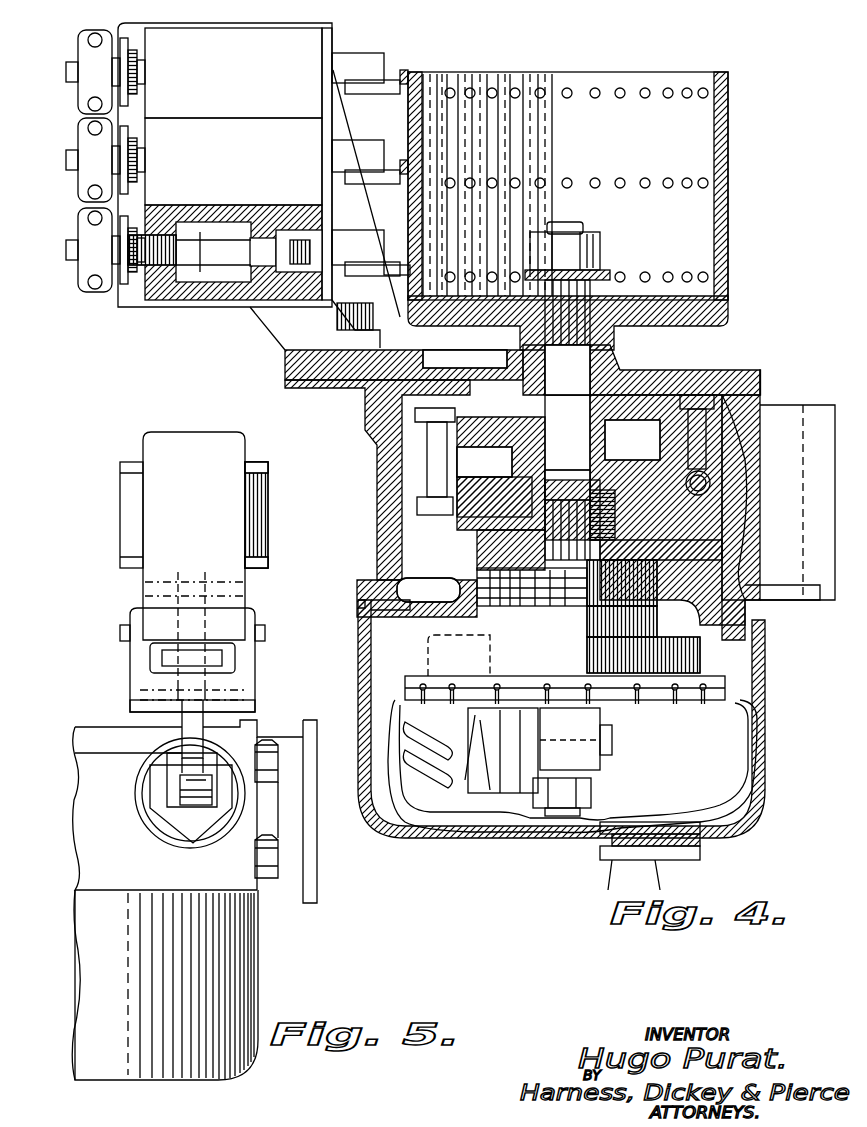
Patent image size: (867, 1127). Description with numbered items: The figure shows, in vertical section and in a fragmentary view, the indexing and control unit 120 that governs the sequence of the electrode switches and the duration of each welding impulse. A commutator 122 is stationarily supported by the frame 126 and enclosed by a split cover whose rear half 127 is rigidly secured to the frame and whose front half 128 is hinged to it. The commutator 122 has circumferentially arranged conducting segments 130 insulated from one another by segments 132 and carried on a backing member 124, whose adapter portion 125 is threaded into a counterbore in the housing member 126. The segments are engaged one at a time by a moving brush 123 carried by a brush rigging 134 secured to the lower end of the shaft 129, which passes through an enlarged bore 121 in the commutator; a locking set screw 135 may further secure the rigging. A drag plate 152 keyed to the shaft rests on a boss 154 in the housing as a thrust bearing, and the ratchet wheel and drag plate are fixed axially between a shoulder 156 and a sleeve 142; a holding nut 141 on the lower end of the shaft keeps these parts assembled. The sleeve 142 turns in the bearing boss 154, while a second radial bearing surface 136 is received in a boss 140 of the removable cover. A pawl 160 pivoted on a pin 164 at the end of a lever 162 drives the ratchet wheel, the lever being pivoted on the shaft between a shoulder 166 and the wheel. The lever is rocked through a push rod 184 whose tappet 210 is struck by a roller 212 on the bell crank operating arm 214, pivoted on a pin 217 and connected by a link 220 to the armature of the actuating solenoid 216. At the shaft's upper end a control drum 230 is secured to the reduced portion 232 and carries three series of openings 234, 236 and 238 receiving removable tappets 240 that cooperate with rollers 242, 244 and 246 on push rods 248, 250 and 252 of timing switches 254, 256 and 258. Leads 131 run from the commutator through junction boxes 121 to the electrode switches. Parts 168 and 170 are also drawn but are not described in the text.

In FIG. 4, the indexing and control unit 120 is at (722, 364).
In FIG. 5, the indexing and control unit 120 is at (244, 871).
In FIG. 4, the enlarged bore 121 is at (425, 655).
In FIG. 4, the commutator 122 is at (691, 713).
In FIG. 4, the brush 123 is at (368, 706).
In FIG. 4, the backing member 124 is at (700, 650).
In FIG. 4, the adapter portion 125 is at (480, 605).
In FIG. 4, the frame 126 is at (658, 605).
In FIG. 4, the rear half of split cover 127 is at (767, 725).
In FIG. 5, the rear half of split cover 127 is at (238, 988).
In FIG. 4, the front half of split cover 128 is at (358, 668).
In FIG. 4, the shaft 129 is at (560, 548).
In FIG. 4, the conducting segments 130 is at (470, 520).
In FIG. 4, the leads 131 is at (740, 770).
In FIG. 4, the insulating segments 132 is at (672, 707).
In FIG. 4, the brush rigging 134 is at (470, 793).
In FIG. 4, the locking set screw 135 is at (612, 748).
In FIG. 4, the second radial bearing surface 136 is at (600, 378).
In FIG. 4, the boss 140 is at (632, 365).
In FIG. 4, the holding nut 141 is at (592, 788).
In FIG. 4, the sleeve 142 is at (640, 560).
In FIG. 4, the drag plate 152 is at (506, 516).
In FIG. 4, the bearing boss 154 is at (560, 535).
In FIG. 4, the shoulder 156 is at (567, 472).
In FIG. 4, the pawl 160 is at (410, 482).
In FIG. 4, the lever 162 is at (497, 420).
In FIG. 4, the pin 164 is at (425, 440).
In FIG. 4, the shoulder 166 is at (635, 477).
In FIG. 4, the bracket 168 is at (740, 440).
In FIG. 4, the mounting plate 170 is at (750, 392).
In FIG. 4, the push rod 184 is at (700, 483).
In FIG. 5, the tappet 210 is at (172, 812).
In FIG. 5, the roller 212 is at (188, 802).
In FIG. 5, the operating arm 214 is at (190, 732).
In FIG. 5, the actuating solenoid 216 is at (258, 462).
In FIG. 5, the pin 217 is at (127, 683).
In FIG. 5, the link 220 is at (200, 660).
In FIG. 4, the control drum 230 is at (728, 233).
In FIG. 4, the reduced portion of shaft 232 is at (567, 272).
In FIG. 4, the openings 234 is at (515, 272).
In FIG. 4, the openings 236 is at (567, 178).
In FIG. 4, the openings 238 is at (515, 100).
In FIG. 4, the removable tappets 240 is at (410, 262).
In FIG. 4, the roller 242 is at (408, 78).
In FIG. 4, the roller 244 is at (410, 170).
In FIG. 4, the roller 246 is at (345, 302).
In FIG. 4, the push rod 248 is at (375, 58).
In FIG. 4, the push rod 250 is at (368, 140).
In FIG. 4, the push rod 252 is at (408, 232).
In FIG. 4, the timing switch 254 is at (225, 165).
In FIG. 4, the timing switch 256 is at (233, 161).
In FIG. 4, the timing switch 258 is at (225, 252).